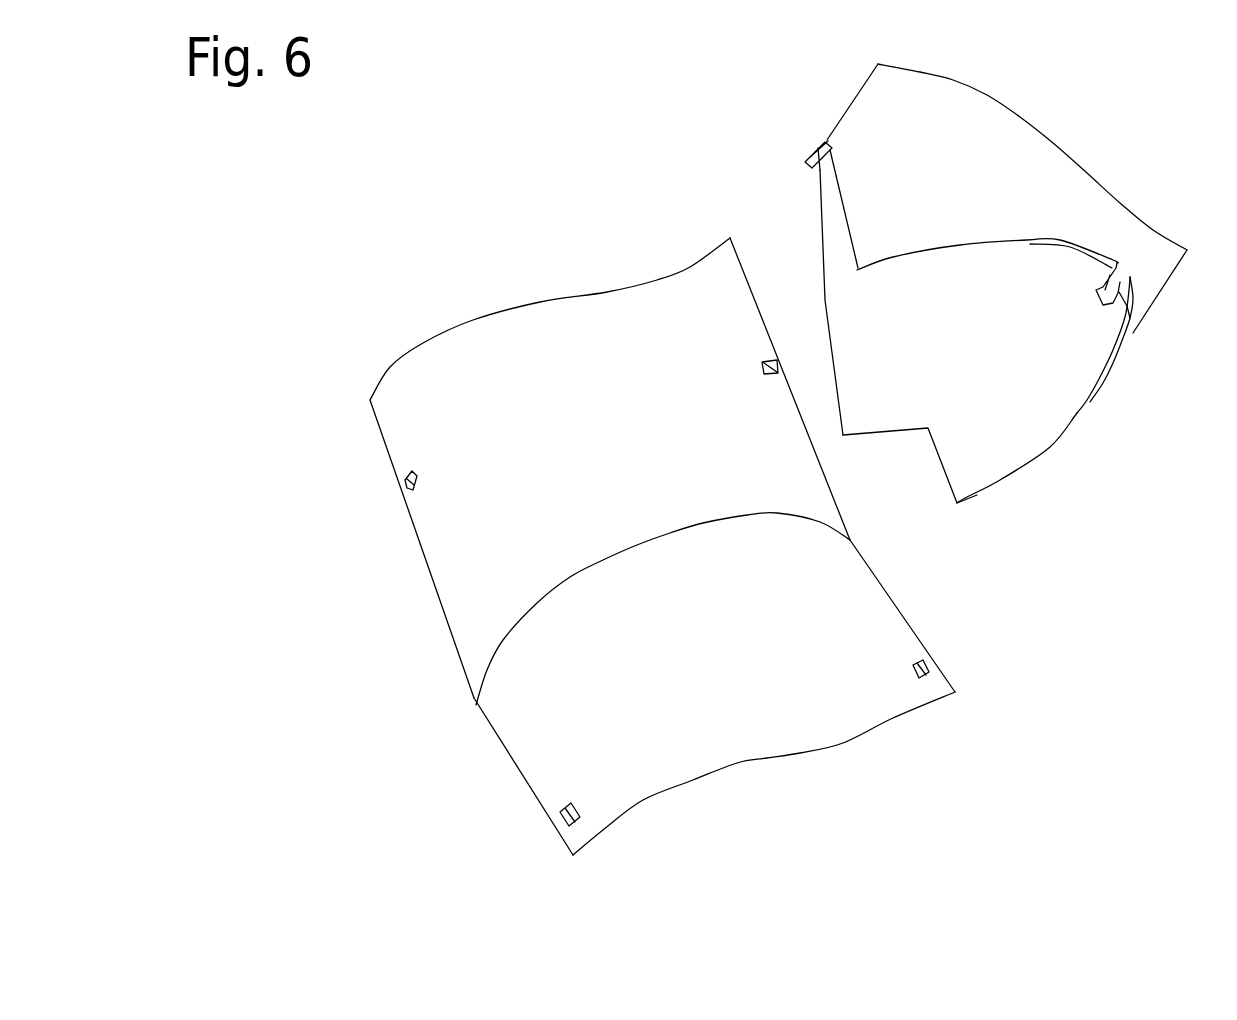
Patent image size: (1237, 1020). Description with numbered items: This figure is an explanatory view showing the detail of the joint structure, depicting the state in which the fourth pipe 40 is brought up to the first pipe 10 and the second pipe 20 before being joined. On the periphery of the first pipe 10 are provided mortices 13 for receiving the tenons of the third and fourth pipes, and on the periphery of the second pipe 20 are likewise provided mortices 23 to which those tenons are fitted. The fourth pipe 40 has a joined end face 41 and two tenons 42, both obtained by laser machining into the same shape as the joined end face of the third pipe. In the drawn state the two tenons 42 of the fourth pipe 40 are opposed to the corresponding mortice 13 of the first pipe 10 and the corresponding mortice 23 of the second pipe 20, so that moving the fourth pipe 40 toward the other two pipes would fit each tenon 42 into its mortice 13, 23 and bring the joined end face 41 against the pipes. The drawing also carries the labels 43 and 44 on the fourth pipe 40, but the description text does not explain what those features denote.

The first pipe 10 is at (515, 717).
The mortice 13 is at (558, 820).
The second pipe 20 is at (440, 567).
The mortice 23 is at (400, 481).
The fourth pipe 40 is at (1152, 278).
The joined end face 41 is at (1110, 382).
The tenon 42 is at (818, 150).
The notch 43 is at (927, 432).
The flap 44 is at (857, 270).